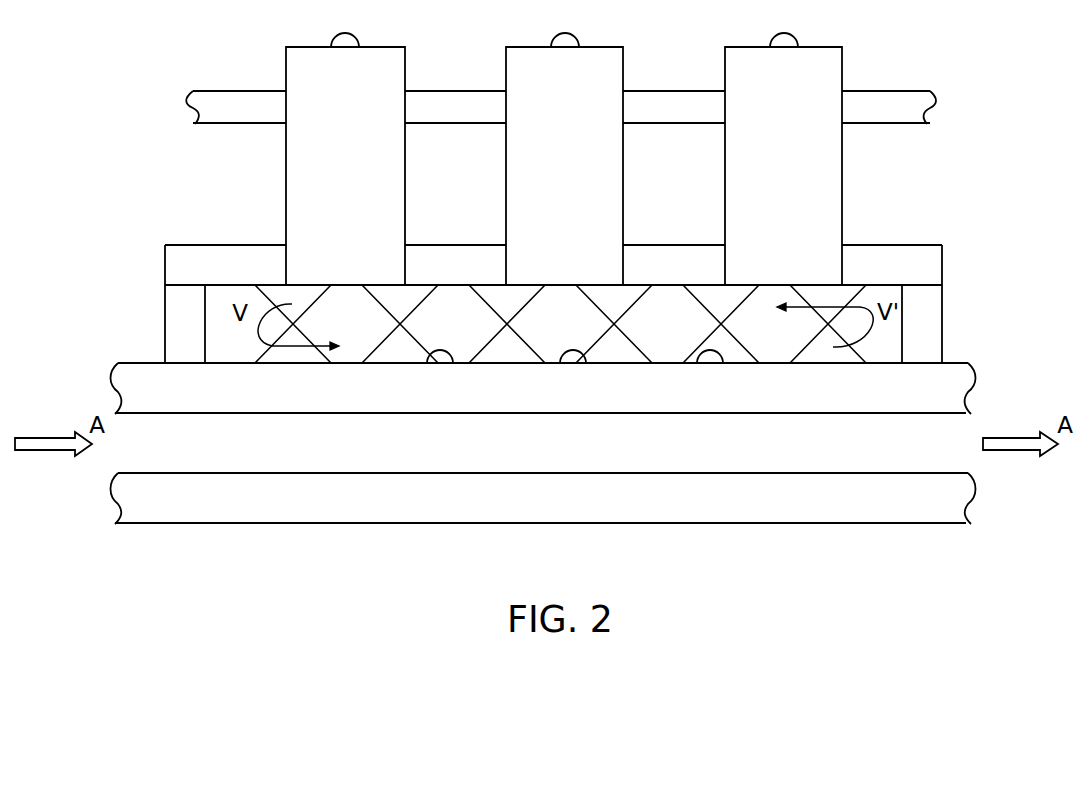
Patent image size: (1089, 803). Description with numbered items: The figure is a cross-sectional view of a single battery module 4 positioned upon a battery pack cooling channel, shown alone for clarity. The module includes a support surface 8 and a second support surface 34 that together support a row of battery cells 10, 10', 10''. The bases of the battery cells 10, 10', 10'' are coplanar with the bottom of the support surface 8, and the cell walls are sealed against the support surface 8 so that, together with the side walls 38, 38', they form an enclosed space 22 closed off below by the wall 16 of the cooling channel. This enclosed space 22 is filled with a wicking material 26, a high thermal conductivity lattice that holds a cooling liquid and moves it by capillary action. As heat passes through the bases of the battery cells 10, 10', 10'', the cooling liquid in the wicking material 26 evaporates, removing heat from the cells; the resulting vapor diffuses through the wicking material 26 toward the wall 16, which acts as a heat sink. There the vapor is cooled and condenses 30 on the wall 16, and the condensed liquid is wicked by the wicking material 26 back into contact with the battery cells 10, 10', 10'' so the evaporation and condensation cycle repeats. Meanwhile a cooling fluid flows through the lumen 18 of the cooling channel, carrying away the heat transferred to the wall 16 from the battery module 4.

The battery cell 10 is at (345, 159).
The battery cell 10' is at (564, 159).
The battery cell 10'' is at (783, 159).
The second support surface 34 is at (912, 92).
The support surface 8 is at (911, 246).
The battery module 4 is at (1001, 92).
The wall 38' is at (149, 324).
The wall 38 is at (944, 324).
The wicking material 26 is at (404, 333).
The enclosed space 22 is at (560, 324).
The condensation 30 is at (440, 366).
The wall 16 is at (946, 388).
The lumen 18 is at (445, 453).